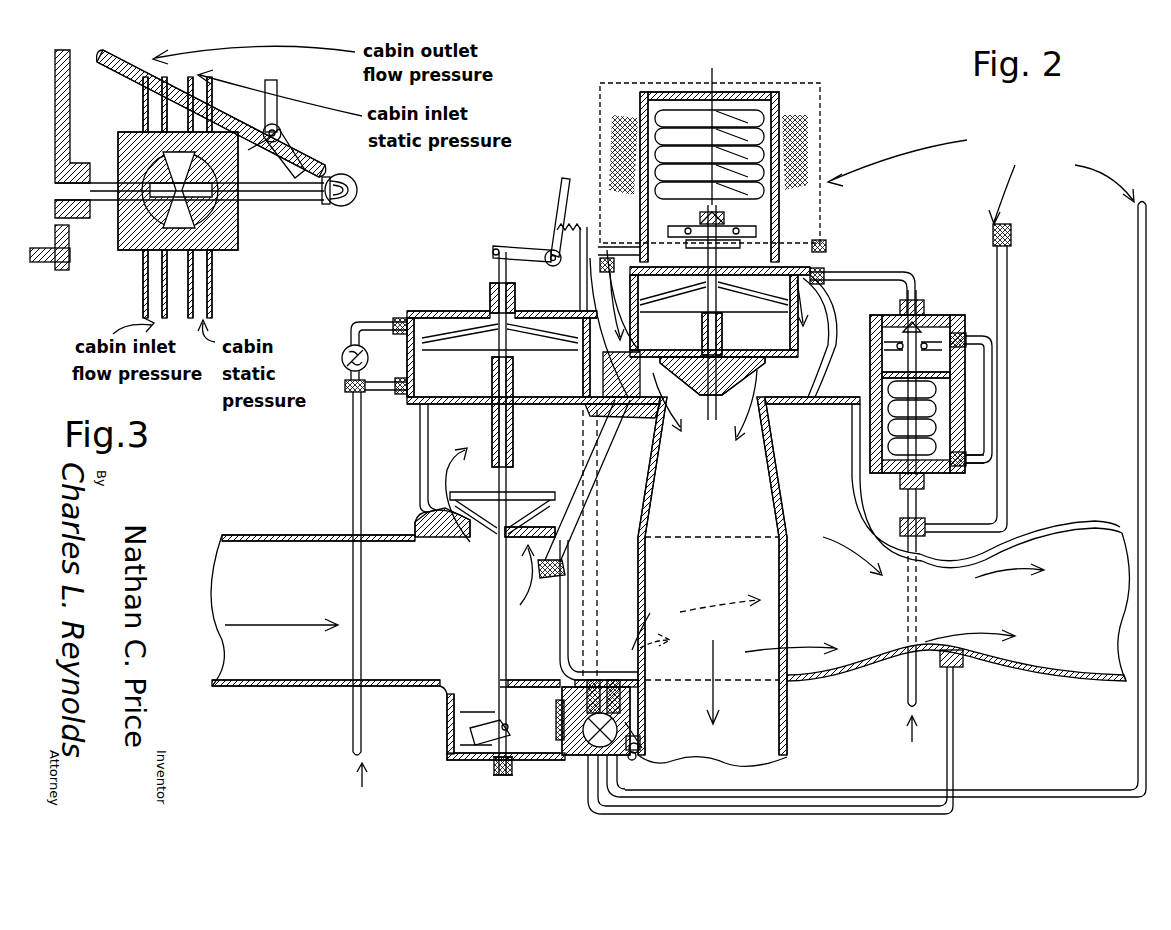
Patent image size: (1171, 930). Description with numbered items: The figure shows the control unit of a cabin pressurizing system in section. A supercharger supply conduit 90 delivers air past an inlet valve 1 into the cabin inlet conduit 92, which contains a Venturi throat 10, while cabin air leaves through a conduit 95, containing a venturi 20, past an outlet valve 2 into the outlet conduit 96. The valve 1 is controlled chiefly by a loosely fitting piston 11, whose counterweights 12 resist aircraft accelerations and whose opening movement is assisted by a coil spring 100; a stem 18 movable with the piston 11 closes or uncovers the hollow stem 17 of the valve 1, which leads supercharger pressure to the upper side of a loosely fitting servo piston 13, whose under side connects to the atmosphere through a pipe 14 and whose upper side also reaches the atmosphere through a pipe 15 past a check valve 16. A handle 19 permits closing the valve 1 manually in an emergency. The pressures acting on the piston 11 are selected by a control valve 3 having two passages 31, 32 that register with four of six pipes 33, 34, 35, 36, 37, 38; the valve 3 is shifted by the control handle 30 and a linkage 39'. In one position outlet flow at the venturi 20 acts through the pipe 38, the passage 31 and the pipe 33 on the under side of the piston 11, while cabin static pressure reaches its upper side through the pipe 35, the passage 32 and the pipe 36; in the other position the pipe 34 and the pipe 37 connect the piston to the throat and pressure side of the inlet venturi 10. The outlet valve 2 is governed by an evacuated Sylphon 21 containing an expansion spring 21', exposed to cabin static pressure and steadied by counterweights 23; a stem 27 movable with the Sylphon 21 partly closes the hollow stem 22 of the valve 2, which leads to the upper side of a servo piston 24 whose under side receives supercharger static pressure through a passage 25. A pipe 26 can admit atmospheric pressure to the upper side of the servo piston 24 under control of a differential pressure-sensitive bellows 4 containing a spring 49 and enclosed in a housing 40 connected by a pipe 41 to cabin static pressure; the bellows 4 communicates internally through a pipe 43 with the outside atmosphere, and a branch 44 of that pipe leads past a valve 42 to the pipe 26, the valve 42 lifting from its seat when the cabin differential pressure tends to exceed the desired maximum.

In FIG. 2, the inlet valve 1 is at (440, 522).
In FIG. 2, the outlet valve 2 is at (767, 387).
In FIG. 2, the control valve 3 is at (585, 748).
In FIG. 3, the control valve 3 is at (240, 215).
In FIG. 2, the differential pressure-sensitive bellows 4 is at (900, 453).
In FIG. 2, the Venturi throat 10 is at (975, 566).
In FIG. 2, the piston 11 is at (467, 692).
In FIG. 2, the counterweights 12 is at (467, 734).
In FIG. 2, the servo piston 13 is at (468, 333).
In FIG. 2, the pipe 14 is at (375, 395).
In FIG. 2, the pipe 15 is at (378, 322).
In FIG. 2, the check valve 16 is at (347, 349).
In FIG. 2, the hollow stem 17 is at (508, 478).
In FIG. 2, the stem 18 is at (497, 565).
In FIG. 2, the handle 19 is at (560, 183).
In FIG. 2, the venturi 20 is at (624, 300).
In FIG. 2, the evacuated Sylphon 21 is at (657, 155).
In FIG. 2, the expansion spring 21' is at (867, 163).
In FIG. 2, the hollow stem 22 is at (710, 410).
In FIG. 2, the counterweights 23 is at (700, 230).
In FIG. 2, the servo piston 24 is at (740, 287).
In FIG. 2, the passage 25 is at (607, 441).
In FIG. 2, the pipe 26 is at (847, 272).
In FIG. 2, the stem 27 is at (708, 240).
In FIG. 2, the control handle 30 is at (628, 742).
In FIG. 3, the control handle 30 is at (278, 125).
In FIG. 2, the valve passage 31 is at (584, 722).
In FIG. 3, the valve passage 31 is at (152, 207).
In FIG. 2, the valve passage 32 is at (628, 742).
In FIG. 3, the valve passage 32 is at (238, 198).
In FIG. 2, the pipe 33 is at (568, 735).
In FIG. 3, the pipe 33 is at (118, 180).
In FIG. 2, the pipe 34 is at (593, 773).
In FIG. 3, the pipe 34 is at (148, 282).
In FIG. 2, the pipe 35 is at (614, 768).
In FIG. 3, the pipe 35 is at (200, 281).
In FIG. 2, the pipe 36 is at (630, 722).
In FIG. 3, the pipe 36 is at (338, 206).
In FIG. 2, the pipe 37 is at (618, 697).
In FIG. 3, the pipe 37 is at (200, 100).
In FIG. 2, the pipe 38 is at (597, 682).
In FIG. 3, the pipe 38 is at (150, 96).
In FIG. 2, the linkage 39' is at (655, 622).
In FIG. 3, the linkage 39' is at (211, 113).
In FIG. 2, the housing 40 is at (869, 393).
In FIG. 2, the pipe 41 is at (1003, 291).
In FIG. 2, the valve 42 is at (900, 333).
In FIG. 2, the pipe 43 is at (907, 498).
In FIG. 2, the branch 44 is at (990, 398).
In FIG. 2, the compression-resisting spring 49 is at (930, 432).
In FIG. 2, the supercharger supply conduit 90 is at (252, 688).
In FIG. 2, the cabin inlet conduit 92 is at (1108, 688).
In FIG. 2, the conduit 95 is at (826, 243).
In FIG. 2, the conduit 96 is at (790, 724).
In FIG. 2, the coil spring 100 is at (497, 777).